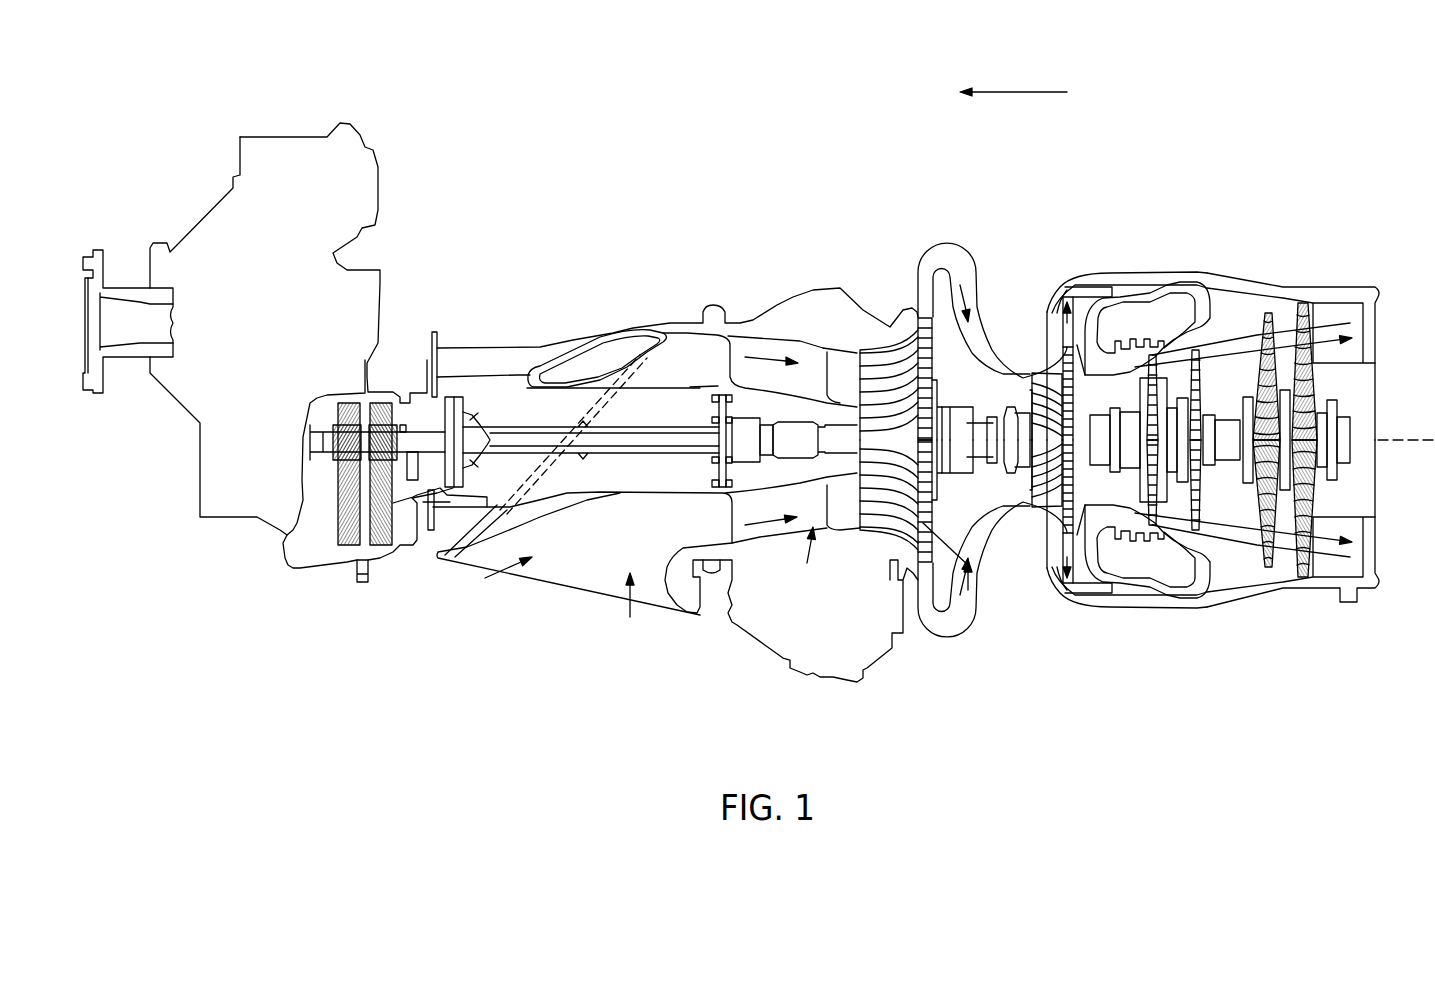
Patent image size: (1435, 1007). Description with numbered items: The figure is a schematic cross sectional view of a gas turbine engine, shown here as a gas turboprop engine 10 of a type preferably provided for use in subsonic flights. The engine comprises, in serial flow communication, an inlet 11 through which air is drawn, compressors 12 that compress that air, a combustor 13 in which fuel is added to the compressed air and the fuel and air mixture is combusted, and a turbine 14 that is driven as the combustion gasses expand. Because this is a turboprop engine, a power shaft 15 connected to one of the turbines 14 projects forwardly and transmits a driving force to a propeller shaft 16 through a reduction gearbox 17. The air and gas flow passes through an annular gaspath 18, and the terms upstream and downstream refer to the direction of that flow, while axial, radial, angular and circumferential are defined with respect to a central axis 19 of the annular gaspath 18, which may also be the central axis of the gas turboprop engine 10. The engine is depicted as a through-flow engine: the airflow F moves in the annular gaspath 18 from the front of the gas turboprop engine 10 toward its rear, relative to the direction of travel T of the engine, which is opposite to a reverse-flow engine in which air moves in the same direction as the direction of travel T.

The gas turboprop engine 10 is at (645, 200).
The inlet 11 is at (598, 567).
The compressors 12 is at (1047, 513).
The combustor 13 is at (1173, 310).
The turbine 14 is at (1140, 513).
The power shaft 15 is at (630, 437).
The propeller shaft 16 is at (123, 263).
The reduction gearbox 17 is at (380, 598).
The annular gaspath 18 is at (811, 545).
The central axis 19 is at (1413, 442).
The direction of travel T is at (1013, 92).
The airflow F is at (762, 527).